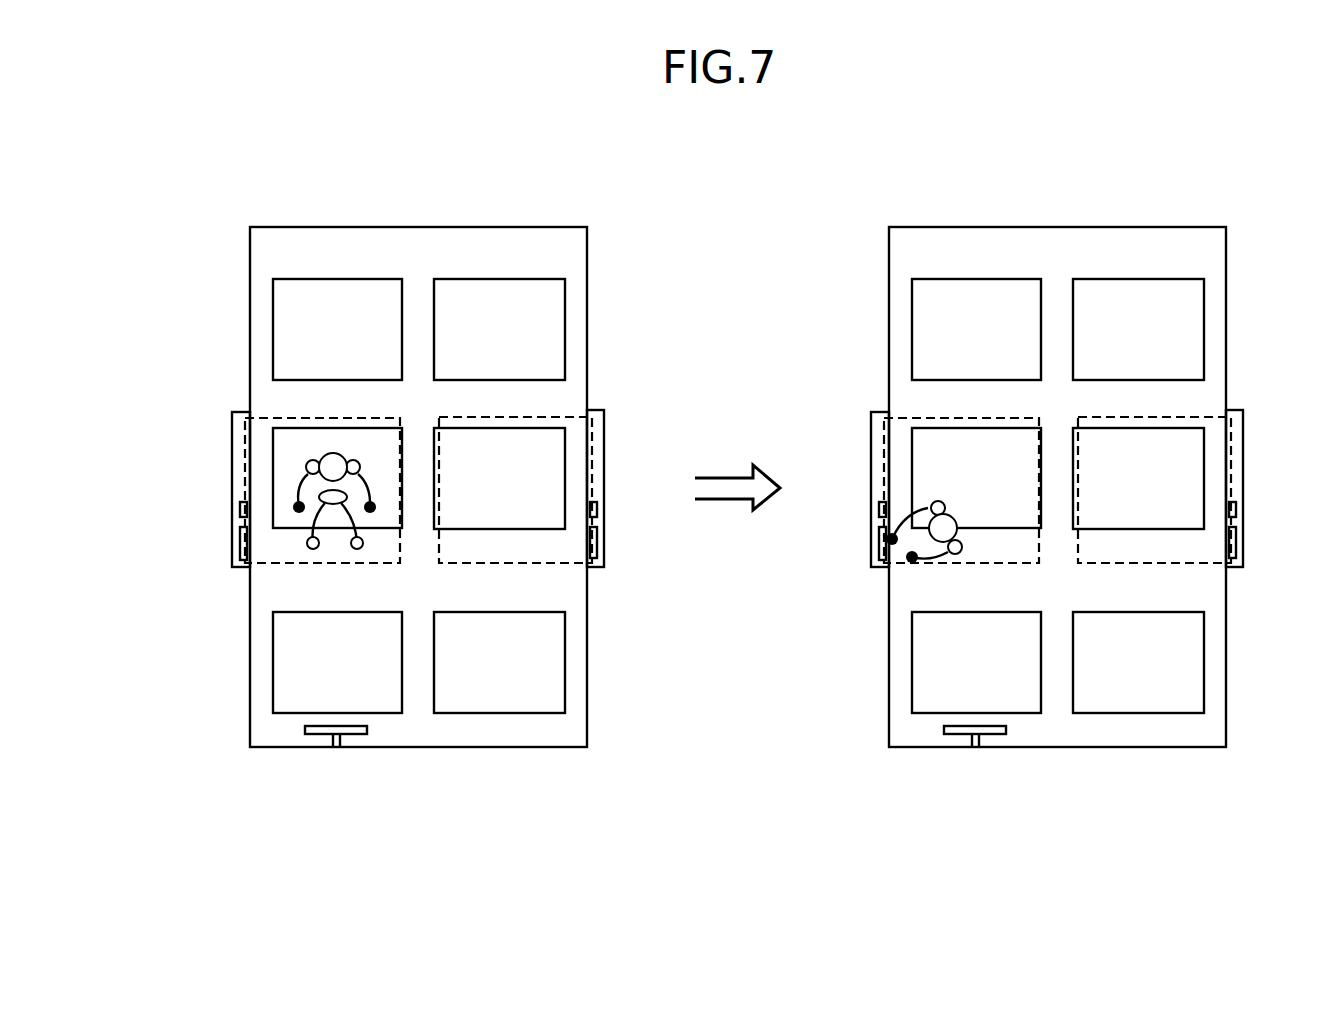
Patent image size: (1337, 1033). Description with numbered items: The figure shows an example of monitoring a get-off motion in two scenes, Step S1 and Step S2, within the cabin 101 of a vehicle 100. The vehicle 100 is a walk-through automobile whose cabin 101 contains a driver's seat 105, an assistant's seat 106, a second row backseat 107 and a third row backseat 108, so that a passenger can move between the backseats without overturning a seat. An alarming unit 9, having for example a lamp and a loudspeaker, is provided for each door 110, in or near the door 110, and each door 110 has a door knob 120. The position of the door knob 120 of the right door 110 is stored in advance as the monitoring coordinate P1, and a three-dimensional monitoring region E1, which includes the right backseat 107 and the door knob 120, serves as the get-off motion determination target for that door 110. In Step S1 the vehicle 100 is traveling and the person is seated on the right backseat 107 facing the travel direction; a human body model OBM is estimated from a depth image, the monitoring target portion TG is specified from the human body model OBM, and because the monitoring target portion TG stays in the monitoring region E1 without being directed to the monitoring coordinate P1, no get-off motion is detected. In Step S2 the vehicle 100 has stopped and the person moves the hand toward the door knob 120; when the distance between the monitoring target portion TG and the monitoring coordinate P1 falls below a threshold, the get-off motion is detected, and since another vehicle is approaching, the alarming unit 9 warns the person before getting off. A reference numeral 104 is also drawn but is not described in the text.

The vehicle 100 is at (317, 202).
The cabin 101 is at (450, 247).
The entrance door 104 is at (300, 733).
The driver's seat 105 is at (273, 660).
The assistant's seat 106 is at (565, 660).
The second row backseat 107 is at (273, 456).
The third row backseat 108 is at (273, 330).
The door 110 is at (231, 470).
The alarming unit 9 is at (240, 510).
The door knob 120 is at (240, 540).
The monitoring region E1 is at (297, 417).
The human body model OBM is at (333, 451).
The monitoring target portion TG is at (298, 517).
The monitoring coordinate P1 is at (872, 553).
The Step S1 is at (408, 164).
The Step S2 is at (1047, 164).